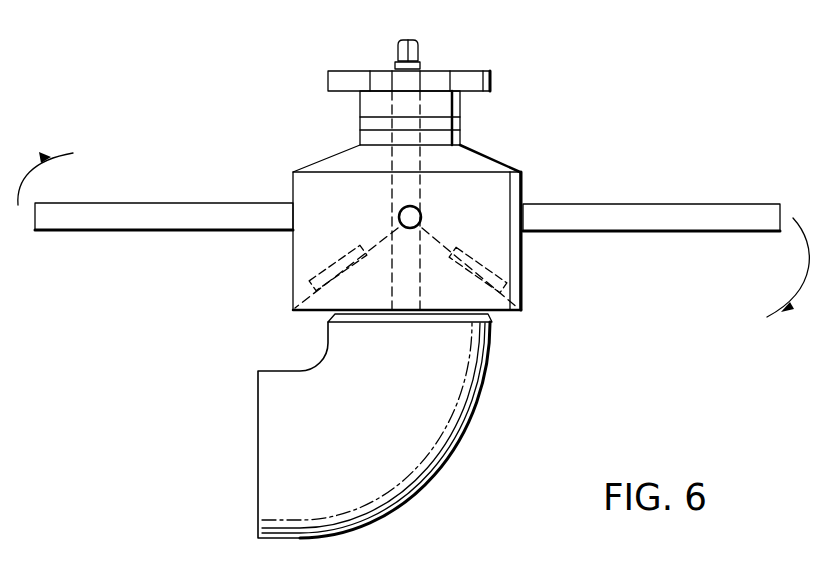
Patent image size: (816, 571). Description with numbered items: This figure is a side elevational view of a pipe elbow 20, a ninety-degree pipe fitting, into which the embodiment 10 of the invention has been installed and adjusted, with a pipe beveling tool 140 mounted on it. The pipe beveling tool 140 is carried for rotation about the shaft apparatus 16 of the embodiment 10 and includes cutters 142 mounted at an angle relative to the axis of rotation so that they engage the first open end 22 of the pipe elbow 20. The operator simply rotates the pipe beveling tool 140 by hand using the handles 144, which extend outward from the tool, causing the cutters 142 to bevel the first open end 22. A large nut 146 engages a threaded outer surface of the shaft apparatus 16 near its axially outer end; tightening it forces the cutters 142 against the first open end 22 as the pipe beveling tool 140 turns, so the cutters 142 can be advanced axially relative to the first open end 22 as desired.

The embodiment 10 is at (426, 51).
The shaft apparatus 16 is at (419, 65).
The large nut 146 is at (491, 78).
The pipe beveling tool 140 is at (519, 172).
The cutters 142 is at (323, 264).
The handles 144 is at (178, 210).
The first open end 22 is at (493, 314).
The pipe elbow 20 is at (481, 413).